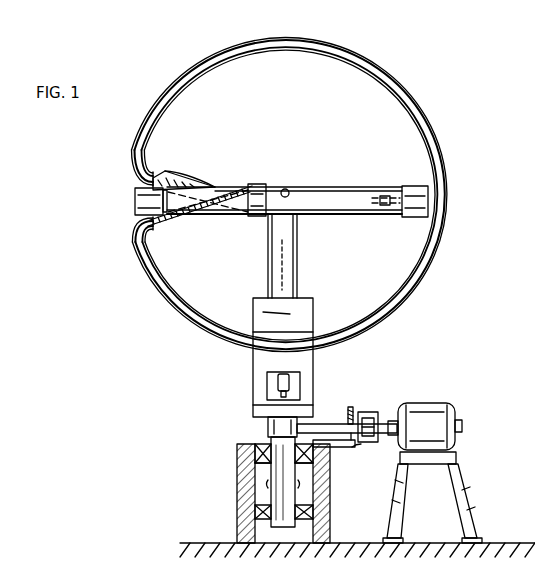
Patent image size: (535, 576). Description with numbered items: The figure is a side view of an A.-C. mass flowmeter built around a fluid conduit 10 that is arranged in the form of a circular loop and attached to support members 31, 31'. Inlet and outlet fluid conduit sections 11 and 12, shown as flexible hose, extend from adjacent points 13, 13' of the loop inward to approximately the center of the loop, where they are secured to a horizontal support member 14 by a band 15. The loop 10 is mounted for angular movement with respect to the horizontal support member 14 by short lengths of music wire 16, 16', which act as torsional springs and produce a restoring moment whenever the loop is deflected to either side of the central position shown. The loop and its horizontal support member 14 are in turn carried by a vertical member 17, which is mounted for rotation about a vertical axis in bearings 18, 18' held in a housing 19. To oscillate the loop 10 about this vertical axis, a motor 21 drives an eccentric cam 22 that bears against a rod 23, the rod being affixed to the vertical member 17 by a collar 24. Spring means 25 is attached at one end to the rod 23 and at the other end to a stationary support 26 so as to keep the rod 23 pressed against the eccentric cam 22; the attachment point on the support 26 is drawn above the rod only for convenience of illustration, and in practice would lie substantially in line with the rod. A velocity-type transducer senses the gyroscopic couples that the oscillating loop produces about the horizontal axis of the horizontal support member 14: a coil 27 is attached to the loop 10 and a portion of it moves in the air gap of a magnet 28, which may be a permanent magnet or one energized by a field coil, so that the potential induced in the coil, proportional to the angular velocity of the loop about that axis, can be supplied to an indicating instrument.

The fluid conduit 10 is at (390, 84).
The inlet fluid conduit section 11 is at (188, 180).
The outlet fluid conduit section 12 is at (200, 222).
The loop point 13 is at (124, 168).
The loop point 13' is at (125, 229).
The horizontal support member 14 is at (338, 187).
The band 15 is at (258, 184).
The music wire 16 is at (184, 168).
The music wire 16' is at (413, 186).
The vertical member 17 is at (298, 243).
The bearing 18 is at (262, 451).
The bearing 18' is at (261, 515).
The housing 19 is at (238, 489).
The motor 21 is at (420, 404).
The eccentric cam 22 is at (363, 412).
The rod 23 is at (346, 428).
The collar 24 is at (268, 431).
The spring means 25 is at (349, 407).
The stationary support 26 is at (361, 444).
The coil 27 is at (279, 386).
The magnet 28 is at (268, 395).
The support member 31 is at (131, 201).
The support member 31' is at (422, 195).